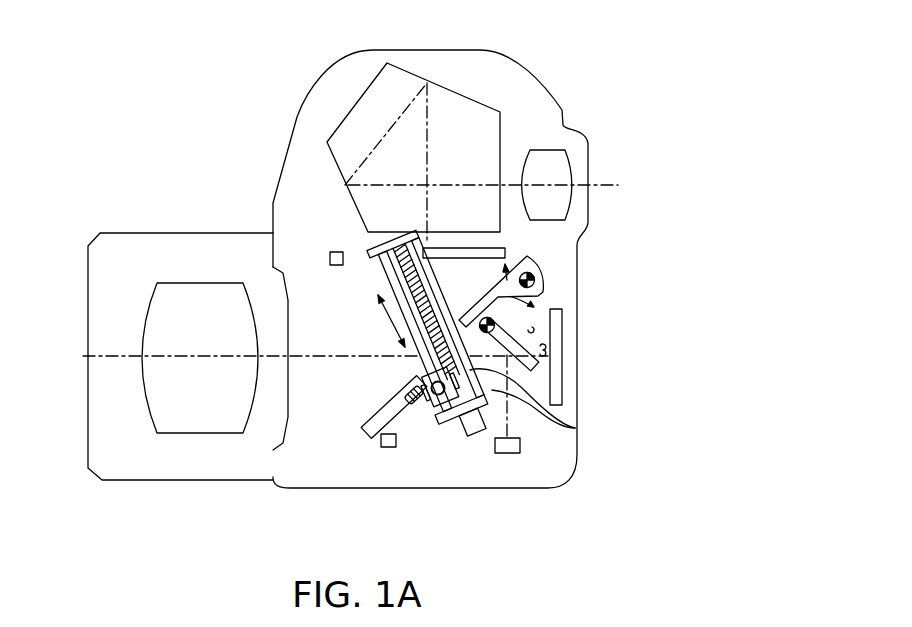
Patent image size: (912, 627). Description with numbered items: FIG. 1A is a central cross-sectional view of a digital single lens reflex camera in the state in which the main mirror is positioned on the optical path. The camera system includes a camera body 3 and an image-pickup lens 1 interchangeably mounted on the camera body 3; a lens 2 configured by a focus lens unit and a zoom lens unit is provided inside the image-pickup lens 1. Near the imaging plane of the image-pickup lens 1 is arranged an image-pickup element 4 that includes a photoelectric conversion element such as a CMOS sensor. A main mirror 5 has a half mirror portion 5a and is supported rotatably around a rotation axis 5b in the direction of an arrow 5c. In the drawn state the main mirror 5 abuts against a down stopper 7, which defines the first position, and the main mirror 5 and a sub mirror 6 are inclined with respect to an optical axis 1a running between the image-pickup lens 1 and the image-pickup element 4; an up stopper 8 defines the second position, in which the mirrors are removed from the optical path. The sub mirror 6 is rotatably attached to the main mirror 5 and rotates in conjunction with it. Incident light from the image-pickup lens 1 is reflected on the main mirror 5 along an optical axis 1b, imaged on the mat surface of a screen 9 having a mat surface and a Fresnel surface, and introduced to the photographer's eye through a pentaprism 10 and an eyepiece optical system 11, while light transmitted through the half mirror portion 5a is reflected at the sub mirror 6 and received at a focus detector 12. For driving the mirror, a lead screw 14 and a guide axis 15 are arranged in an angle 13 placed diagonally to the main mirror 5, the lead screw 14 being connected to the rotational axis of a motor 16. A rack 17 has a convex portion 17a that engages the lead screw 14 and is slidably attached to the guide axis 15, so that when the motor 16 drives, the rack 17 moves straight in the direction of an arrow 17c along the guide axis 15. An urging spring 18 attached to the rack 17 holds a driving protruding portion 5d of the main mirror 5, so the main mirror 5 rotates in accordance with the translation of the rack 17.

The image-pickup lens 1 is at (182, 233).
The optical axis 1a is at (130, 358).
The optical axis of reflected light 1b is at (428, 125).
The lens 2 is at (183, 433).
The camera body 3 is at (550, 88).
The image-pickup element 4 is at (563, 382).
The main mirror 5 is at (367, 433).
The half mirror portion 5a is at (377, 410).
The rotation axis 5b is at (532, 256).
The arrow 5c is at (506, 262).
The driving protruding portion 5d is at (403, 398).
The sub mirror 6 is at (528, 330).
The down stopper 7 is at (388, 447).
The up stopper 8 is at (328, 255).
The screen 9 is at (472, 248).
The pentaprism 10 is at (343, 118).
The eyepiece optical system 11 is at (570, 165).
The focus detector 12 is at (503, 453).
The angle 13 is at (436, 280).
The lead screw 14 is at (424, 315).
The guide axis 15 is at (387, 277).
The motor 16 is at (473, 432).
The rack 17 is at (437, 405).
The convex portion 17a is at (575, 428).
The arrow 17c is at (392, 320).
The urging spring 18 is at (432, 407).